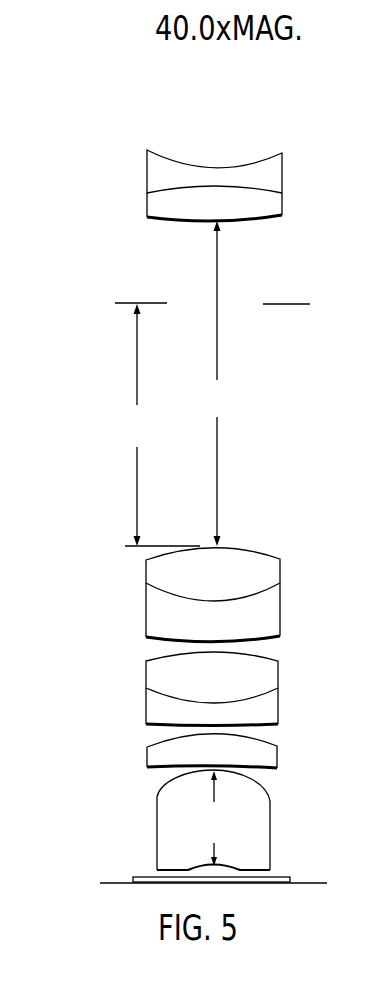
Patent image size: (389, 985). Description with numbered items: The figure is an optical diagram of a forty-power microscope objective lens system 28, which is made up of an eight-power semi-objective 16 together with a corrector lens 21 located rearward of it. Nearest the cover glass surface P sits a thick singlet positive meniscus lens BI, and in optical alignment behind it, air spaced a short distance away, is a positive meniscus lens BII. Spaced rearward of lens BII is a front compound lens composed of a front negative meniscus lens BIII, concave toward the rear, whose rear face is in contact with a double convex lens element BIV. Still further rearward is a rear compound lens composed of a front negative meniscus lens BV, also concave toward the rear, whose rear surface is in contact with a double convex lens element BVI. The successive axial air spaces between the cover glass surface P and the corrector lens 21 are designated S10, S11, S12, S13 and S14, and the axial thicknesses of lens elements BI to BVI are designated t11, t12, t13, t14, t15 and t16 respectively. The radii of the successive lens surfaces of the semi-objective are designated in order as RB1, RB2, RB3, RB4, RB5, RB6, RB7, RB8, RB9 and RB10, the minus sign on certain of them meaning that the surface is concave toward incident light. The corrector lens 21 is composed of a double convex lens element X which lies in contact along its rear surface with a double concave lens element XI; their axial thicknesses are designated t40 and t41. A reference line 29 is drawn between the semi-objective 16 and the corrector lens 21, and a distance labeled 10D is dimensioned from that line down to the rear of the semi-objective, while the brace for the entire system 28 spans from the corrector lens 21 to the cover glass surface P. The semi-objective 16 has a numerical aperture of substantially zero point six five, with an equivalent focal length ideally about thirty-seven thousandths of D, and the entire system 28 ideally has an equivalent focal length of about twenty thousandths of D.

The objective lens system 28 is at (52, 867).
The corrector lens 21 is at (139, 173).
The reference plane 29 is at (148, 302).
The semi-objective 16 is at (92, 866).
The cover glass surface P is at (137, 877).
The double concave lens element XI is at (214, 171).
The double convex lens element X is at (214, 207).
The singlet positive meniscus lens BI is at (213, 820).
The positive meniscus lens BII is at (212, 751).
The front negative meniscus lens BIII is at (212, 707).
The double convex lens element BIV is at (212, 677).
The front negative meniscus lens BV is at (213, 612).
The double convex lens element BVI is at (213, 574).
The axial air space S10 is at (213, 875).
The axial air space S11 is at (215, 770).
The axial air space S12 is at (215, 729).
The axial air space S13 is at (215, 647).
The axial air space S14 is at (226, 383).
The axial thickness t11 is at (217, 818).
The axial thickness t12 is at (212, 756).
The axial thickness t13 is at (253, 718).
The axial thickness t14 is at (220, 690).
The axial thickness t15 is at (220, 633).
The axial thickness t16 is at (220, 588).
The axial thickness t40 is at (226, 211).
The axial thickness t41 is at (213, 181).
The lens surface radius RB1 is at (198, 868).
The lens surface radius RB2 is at (157, 795).
The lens surface radius RB3 is at (160, 770).
The lens surface radius RB4 is at (148, 748).
The lens surface radius RB5 is at (148, 727).
The lens surface radius RB6 is at (148, 690).
The lens surface radius RB7 is at (150, 662).
The lens surface radius RB8 is at (148, 638).
The lens surface radius RB9 is at (149, 591).
The lens surface radius RB10 is at (150, 558).
The distance . 10D is at (161, 425).